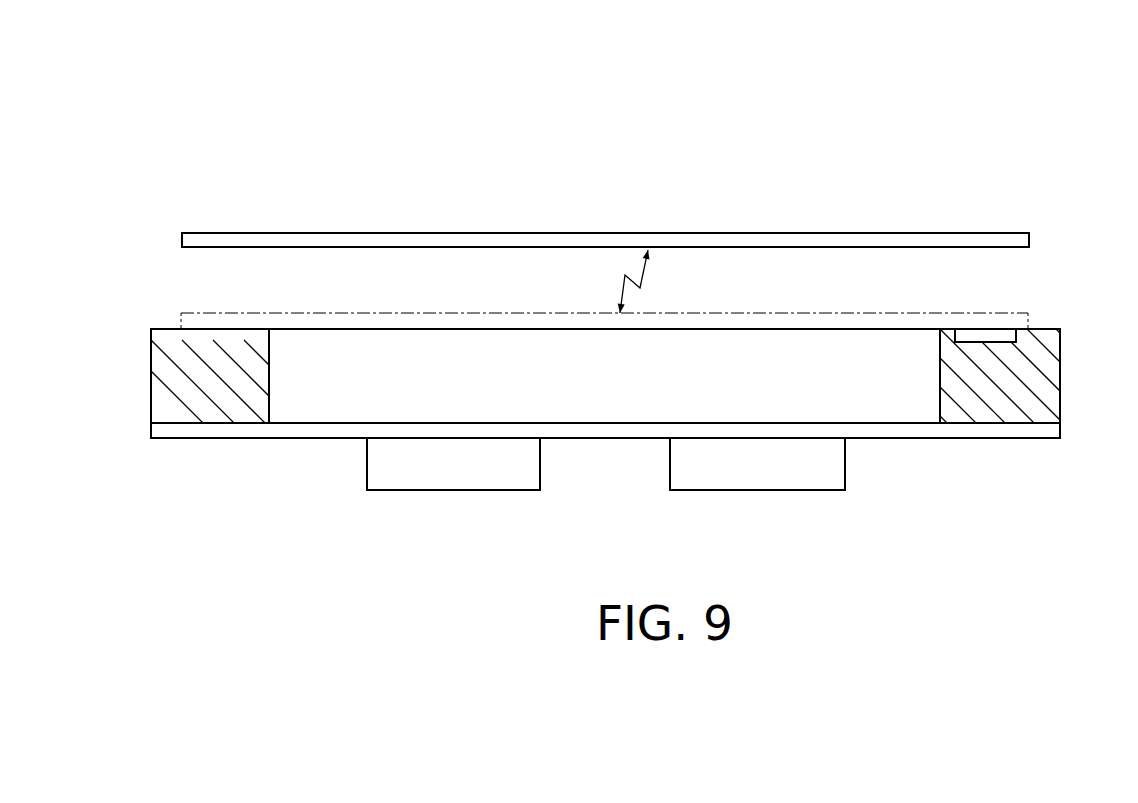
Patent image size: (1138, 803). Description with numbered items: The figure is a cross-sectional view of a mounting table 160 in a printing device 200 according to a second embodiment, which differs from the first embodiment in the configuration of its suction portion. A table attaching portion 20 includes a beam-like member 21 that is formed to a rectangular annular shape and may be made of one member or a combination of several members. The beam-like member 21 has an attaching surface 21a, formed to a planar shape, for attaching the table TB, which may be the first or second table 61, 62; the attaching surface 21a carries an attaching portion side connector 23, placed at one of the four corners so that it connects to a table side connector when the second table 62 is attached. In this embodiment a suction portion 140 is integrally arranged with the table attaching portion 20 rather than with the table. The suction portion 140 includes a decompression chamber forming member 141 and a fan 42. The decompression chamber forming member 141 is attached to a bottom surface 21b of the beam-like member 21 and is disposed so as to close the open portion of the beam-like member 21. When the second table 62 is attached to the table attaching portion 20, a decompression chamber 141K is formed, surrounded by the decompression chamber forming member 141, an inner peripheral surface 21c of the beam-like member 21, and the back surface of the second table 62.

The printing device 200 is at (1075, 72).
The mounting table 160 is at (1037, 161).
The table TB is at (968, 238).
The first table 61 is at (605, 240).
The second table 62 is at (605, 240).
The table attaching portion 20 is at (1066, 410).
The beam-like member 21 is at (1062, 382).
The attaching surface 21a is at (1047, 328).
The bottom surface 21b is at (1030, 428).
The inner peripheral surface 21c is at (272, 352).
The attaching portion side connector 23 is at (1002, 337).
The suction portion 140 is at (371, 521).
The decompression chamber forming member 141 is at (283, 430).
The decompression chamber 141K is at (900, 395).
The fan 42 is at (453, 483).